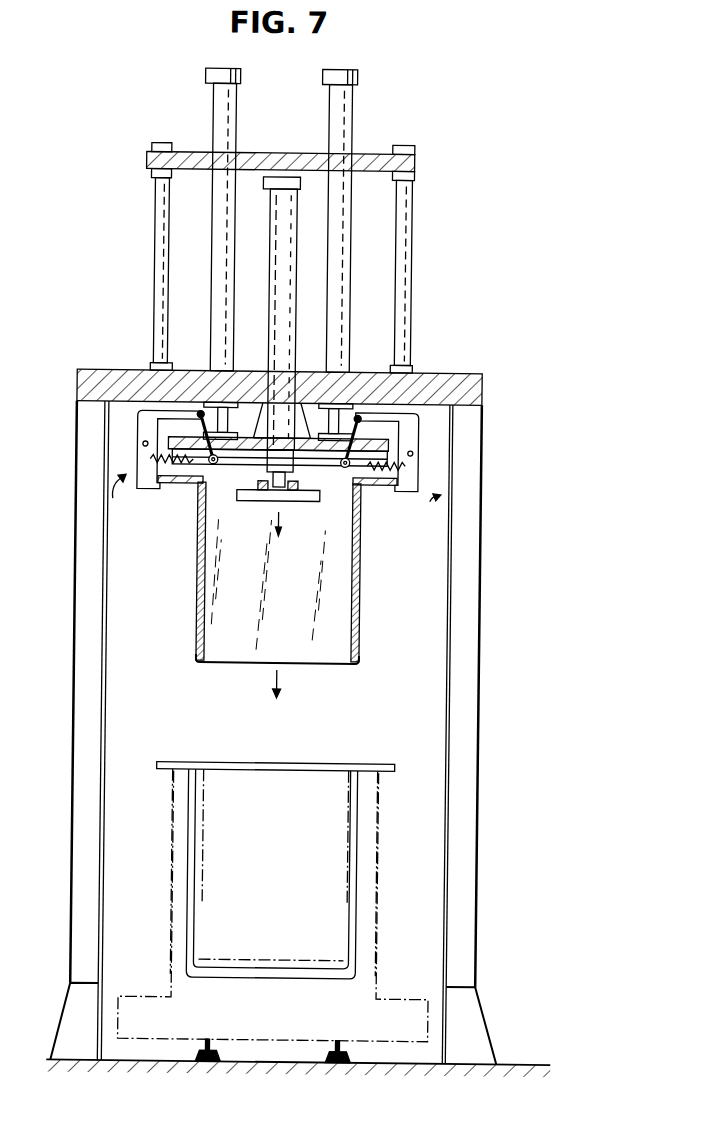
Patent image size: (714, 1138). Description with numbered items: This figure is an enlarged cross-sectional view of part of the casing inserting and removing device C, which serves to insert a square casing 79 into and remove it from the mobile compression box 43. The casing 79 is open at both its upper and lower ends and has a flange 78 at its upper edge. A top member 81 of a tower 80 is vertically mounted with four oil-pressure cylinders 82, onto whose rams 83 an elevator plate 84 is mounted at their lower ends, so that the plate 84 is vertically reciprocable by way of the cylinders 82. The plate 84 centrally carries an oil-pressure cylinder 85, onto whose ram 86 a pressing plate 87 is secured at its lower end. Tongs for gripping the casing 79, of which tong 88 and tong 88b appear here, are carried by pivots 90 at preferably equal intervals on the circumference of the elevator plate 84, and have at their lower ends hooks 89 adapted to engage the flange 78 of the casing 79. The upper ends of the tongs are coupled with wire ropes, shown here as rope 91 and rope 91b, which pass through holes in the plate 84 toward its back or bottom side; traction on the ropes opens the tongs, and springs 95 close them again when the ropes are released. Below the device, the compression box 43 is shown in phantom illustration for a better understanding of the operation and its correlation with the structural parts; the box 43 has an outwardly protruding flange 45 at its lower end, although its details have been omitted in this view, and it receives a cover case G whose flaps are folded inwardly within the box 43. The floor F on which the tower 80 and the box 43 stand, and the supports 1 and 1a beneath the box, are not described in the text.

The foot 1 is at (344, 1064).
The foot 1a is at (214, 1064).
The compression box 43 is at (382, 855).
The flange 45 is at (391, 998).
The flange 78 is at (179, 490).
The casing 79 is at (361, 588).
The tower 80 is at (452, 704).
The top member 81 is at (451, 384).
The oil-pressure cylinders 82 is at (209, 239).
The rams 83 is at (216, 418).
The elevator plate 84 is at (246, 434).
The oil-pressure cylinder 85 is at (294, 280).
The ram 86 is at (286, 502).
The pressing plate 87 is at (248, 502).
The tong 88 is at (411, 468).
The tong 88b is at (275, 500).
The hooks 89 is at (146, 494).
The pivots 90 is at (145, 441).
The wire rope 91 is at (268, 486).
The wire rope 91b is at (246, 485).
The springs 95 is at (150, 460).
The casing inserting and removing device C is at (108, 336).
The floor F is at (518, 1062).
The cover case G is at (285, 975).